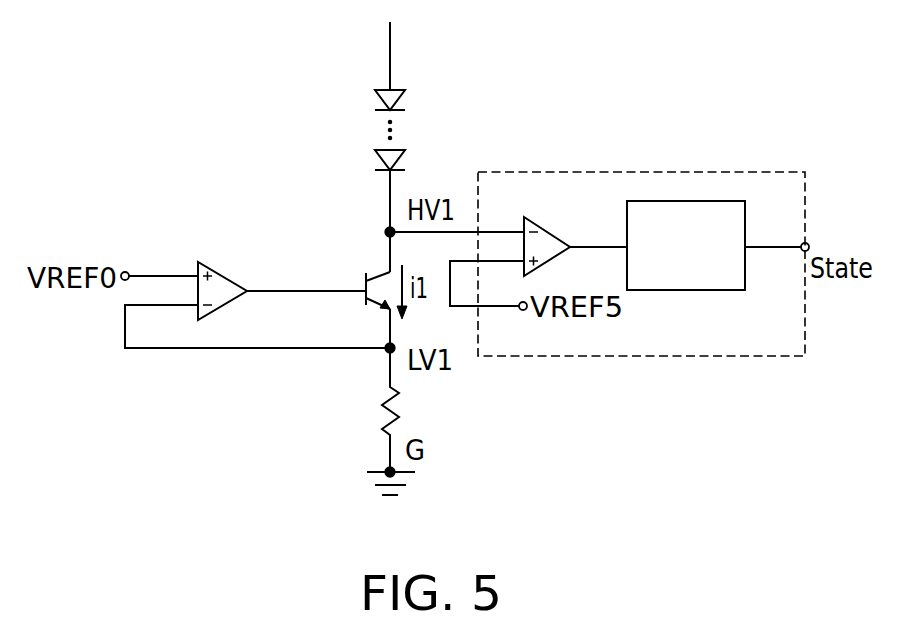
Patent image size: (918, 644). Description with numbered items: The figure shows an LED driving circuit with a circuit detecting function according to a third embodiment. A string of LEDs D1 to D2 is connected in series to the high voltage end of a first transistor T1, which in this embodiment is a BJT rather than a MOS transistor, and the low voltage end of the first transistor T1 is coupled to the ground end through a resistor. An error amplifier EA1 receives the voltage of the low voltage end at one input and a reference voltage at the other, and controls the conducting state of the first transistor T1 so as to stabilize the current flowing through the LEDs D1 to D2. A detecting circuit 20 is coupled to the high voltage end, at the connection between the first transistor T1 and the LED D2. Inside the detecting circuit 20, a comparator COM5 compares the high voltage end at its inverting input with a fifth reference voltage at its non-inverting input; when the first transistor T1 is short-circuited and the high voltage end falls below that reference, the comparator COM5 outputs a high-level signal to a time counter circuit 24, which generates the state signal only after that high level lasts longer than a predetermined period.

The detecting circuit 20 is at (622, 172).
The time counter circuit 24 is at (670, 290).
The LED D1 is at (413, 100).
The LED D2 is at (413, 160).
The first transistor T1 is at (368, 292).
The error amplifier EA1 is at (239, 283).
The comparator COM5 is at (569, 229).